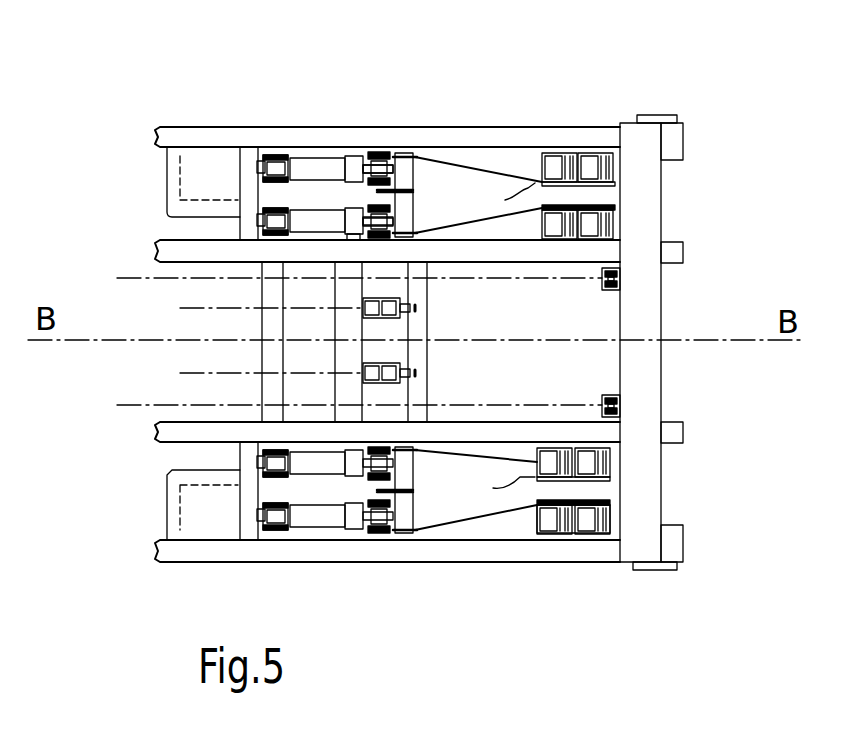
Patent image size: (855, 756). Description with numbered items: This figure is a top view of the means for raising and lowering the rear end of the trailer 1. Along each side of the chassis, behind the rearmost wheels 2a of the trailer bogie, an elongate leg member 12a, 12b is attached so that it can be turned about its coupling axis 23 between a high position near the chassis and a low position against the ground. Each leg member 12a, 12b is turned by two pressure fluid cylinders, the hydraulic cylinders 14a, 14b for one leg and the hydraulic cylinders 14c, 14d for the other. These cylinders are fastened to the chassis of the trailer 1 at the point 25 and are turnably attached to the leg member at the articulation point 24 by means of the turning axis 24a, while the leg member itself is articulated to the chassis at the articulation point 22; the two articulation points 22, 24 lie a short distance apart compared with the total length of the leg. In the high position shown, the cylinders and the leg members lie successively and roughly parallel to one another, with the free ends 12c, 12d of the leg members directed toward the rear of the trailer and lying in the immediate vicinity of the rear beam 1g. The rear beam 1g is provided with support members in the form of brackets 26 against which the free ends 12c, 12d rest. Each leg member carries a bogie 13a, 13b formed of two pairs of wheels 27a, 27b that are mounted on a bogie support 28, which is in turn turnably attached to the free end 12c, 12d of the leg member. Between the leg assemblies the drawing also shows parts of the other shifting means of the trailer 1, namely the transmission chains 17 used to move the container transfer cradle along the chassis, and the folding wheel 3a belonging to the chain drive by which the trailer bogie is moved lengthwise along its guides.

The trailer 1 is at (160, 430).
The rear beam 1g is at (652, 297).
The rearmost wheels 2a is at (208, 160).
The folding wheel 3a is at (215, 373).
The leg member 12a is at (445, 165).
The leg member 12b is at (453, 518).
The free end of leg member 12c is at (520, 200).
The free end of leg member 12d is at (548, 510).
The bogie of leg member 13a is at (580, 558).
The bogie of leg member 13b is at (583, 115).
The hydraulic cylinder 14a is at (307, 170).
The hydraulic cylinder 14b is at (310, 220).
The hydraulic cylinder 14c is at (315, 462).
The hydraulic cylinder 14d is at (312, 515).
The transmission chains 17 is at (160, 405).
The articulation point 22 is at (385, 135).
The axis 23 is at (388, 202).
The articulation point 24 is at (383, 555).
The turning axis 24a is at (375, 153).
The point 25 is at (278, 135).
The bracket 26 is at (590, 205).
The pair of wheels 27a is at (583, 170).
The pair of wheels 27b is at (484, 344).
The bogie support 28 is at (597, 153).